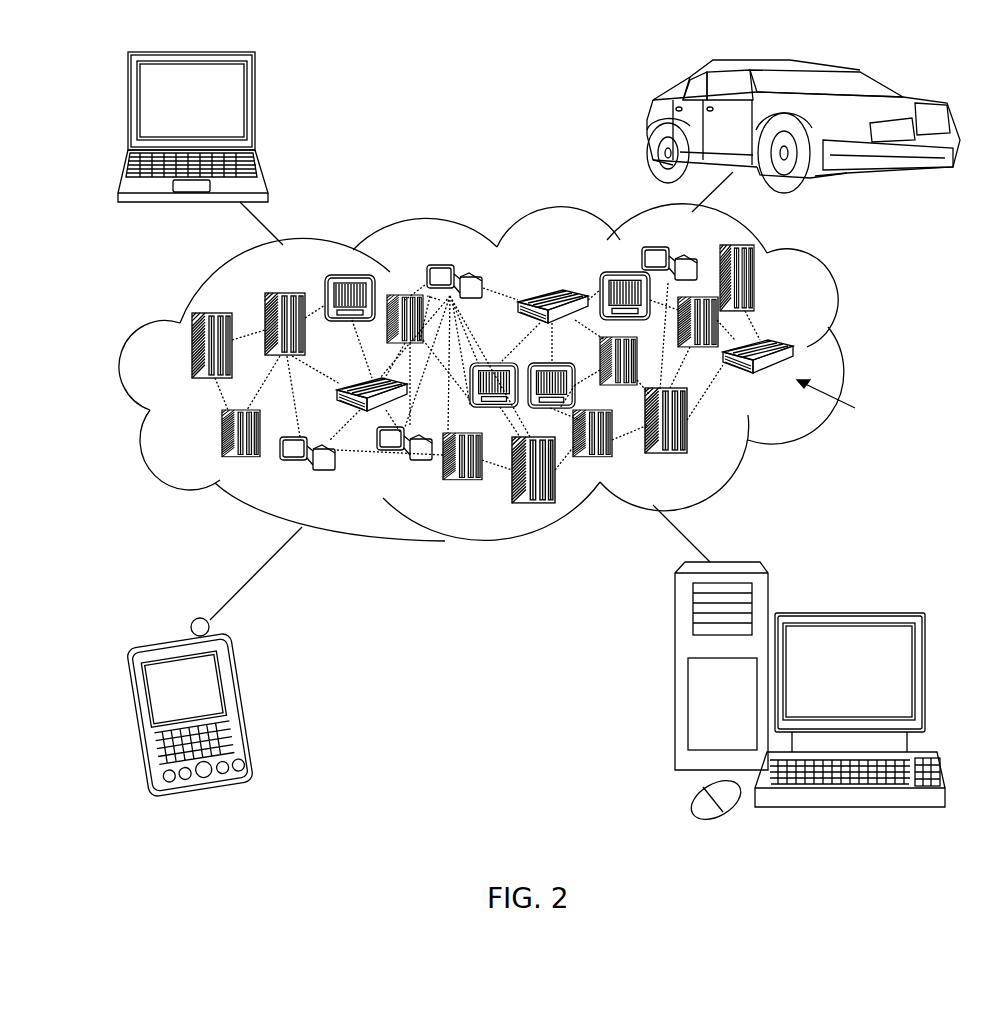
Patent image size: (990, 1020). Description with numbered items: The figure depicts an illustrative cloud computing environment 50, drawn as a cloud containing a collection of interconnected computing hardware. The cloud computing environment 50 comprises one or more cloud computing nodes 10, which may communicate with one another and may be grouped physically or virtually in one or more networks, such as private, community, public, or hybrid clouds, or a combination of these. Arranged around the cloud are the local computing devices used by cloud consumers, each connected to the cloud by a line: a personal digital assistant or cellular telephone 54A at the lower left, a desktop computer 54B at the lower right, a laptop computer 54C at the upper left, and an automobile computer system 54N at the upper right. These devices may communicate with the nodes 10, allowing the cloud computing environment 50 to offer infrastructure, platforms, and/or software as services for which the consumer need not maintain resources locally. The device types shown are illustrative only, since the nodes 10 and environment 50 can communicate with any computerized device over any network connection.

The laptop computer 54C is at (255, 107).
The automobile computer system 54N is at (648, 122).
The cloud computing environment 50 is at (847, 355).
The cloud computing nodes 10 is at (840, 403).
The personal digital assistant or cellular telephone 54A is at (247, 700).
The desktop computer 54B is at (845, 612).